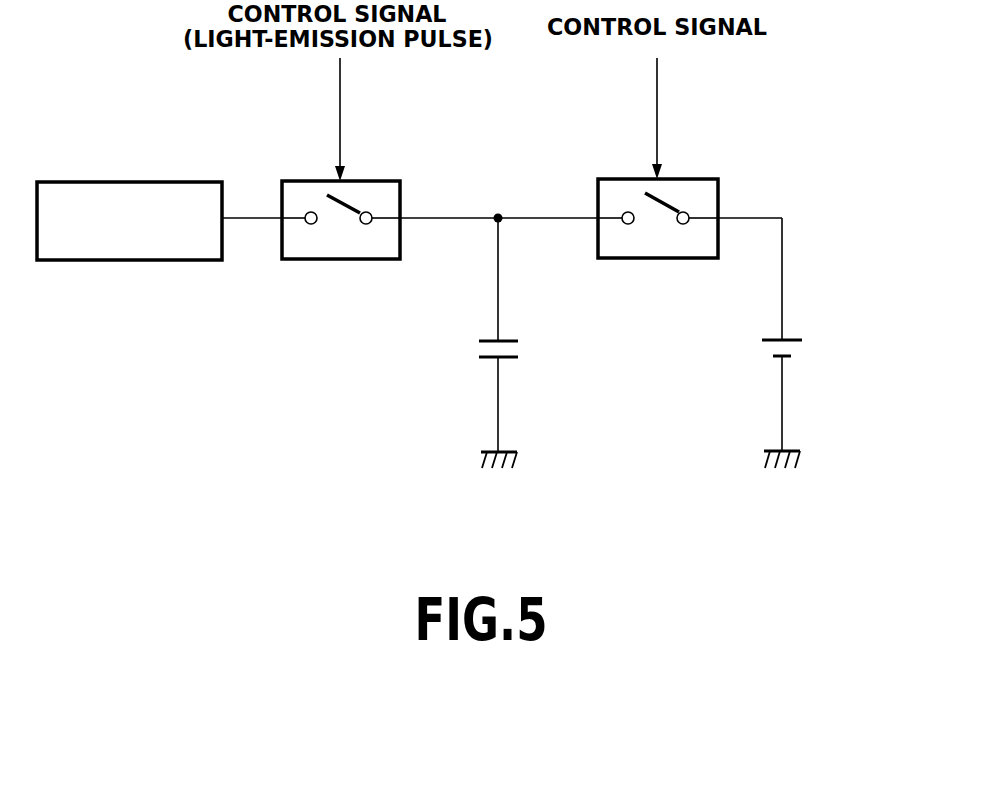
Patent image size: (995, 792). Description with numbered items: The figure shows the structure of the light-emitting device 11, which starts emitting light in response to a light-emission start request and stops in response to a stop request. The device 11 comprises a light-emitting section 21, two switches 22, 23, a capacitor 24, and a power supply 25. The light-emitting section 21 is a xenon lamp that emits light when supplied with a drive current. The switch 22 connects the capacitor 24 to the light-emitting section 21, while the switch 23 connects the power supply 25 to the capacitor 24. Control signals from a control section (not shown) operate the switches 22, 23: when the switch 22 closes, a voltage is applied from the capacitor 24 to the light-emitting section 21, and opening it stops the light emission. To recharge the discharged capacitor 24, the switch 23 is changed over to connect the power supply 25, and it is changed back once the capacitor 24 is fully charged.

The light-emitting device 11 is at (431, 388).
The light-emitting section 21 is at (157, 182).
The switch 22 is at (378, 181).
The switch 23 is at (695, 179).
The capacitor 24 is at (534, 344).
The power supply 25 is at (814, 344).